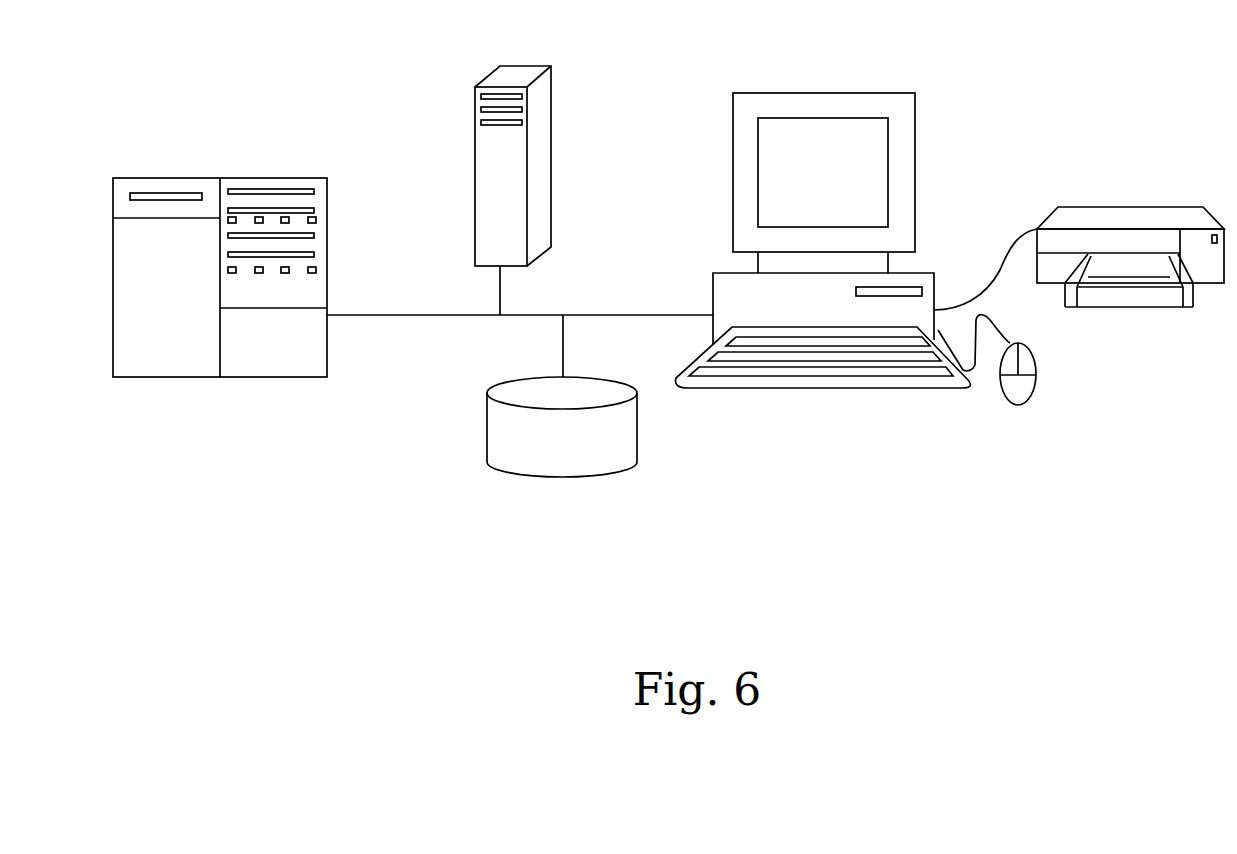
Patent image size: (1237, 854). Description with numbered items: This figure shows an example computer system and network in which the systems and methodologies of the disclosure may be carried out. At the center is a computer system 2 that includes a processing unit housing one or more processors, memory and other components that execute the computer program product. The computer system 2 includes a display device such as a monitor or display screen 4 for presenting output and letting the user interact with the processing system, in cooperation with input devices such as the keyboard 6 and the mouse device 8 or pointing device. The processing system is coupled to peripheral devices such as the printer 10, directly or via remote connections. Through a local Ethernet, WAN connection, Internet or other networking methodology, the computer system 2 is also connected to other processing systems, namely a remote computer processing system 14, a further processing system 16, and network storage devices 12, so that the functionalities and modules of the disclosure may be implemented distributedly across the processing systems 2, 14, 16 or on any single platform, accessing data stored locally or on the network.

The computer system 2 is at (718, 298).
The display screen 4 is at (915, 168).
The keyboard 6 is at (882, 390).
The mouse device 8 is at (1037, 390).
The printer 10 is at (1130, 207).
The network storage devices 12 is at (580, 475).
The remote computer processing system 14 is at (551, 155).
The processing system 16 is at (262, 178).